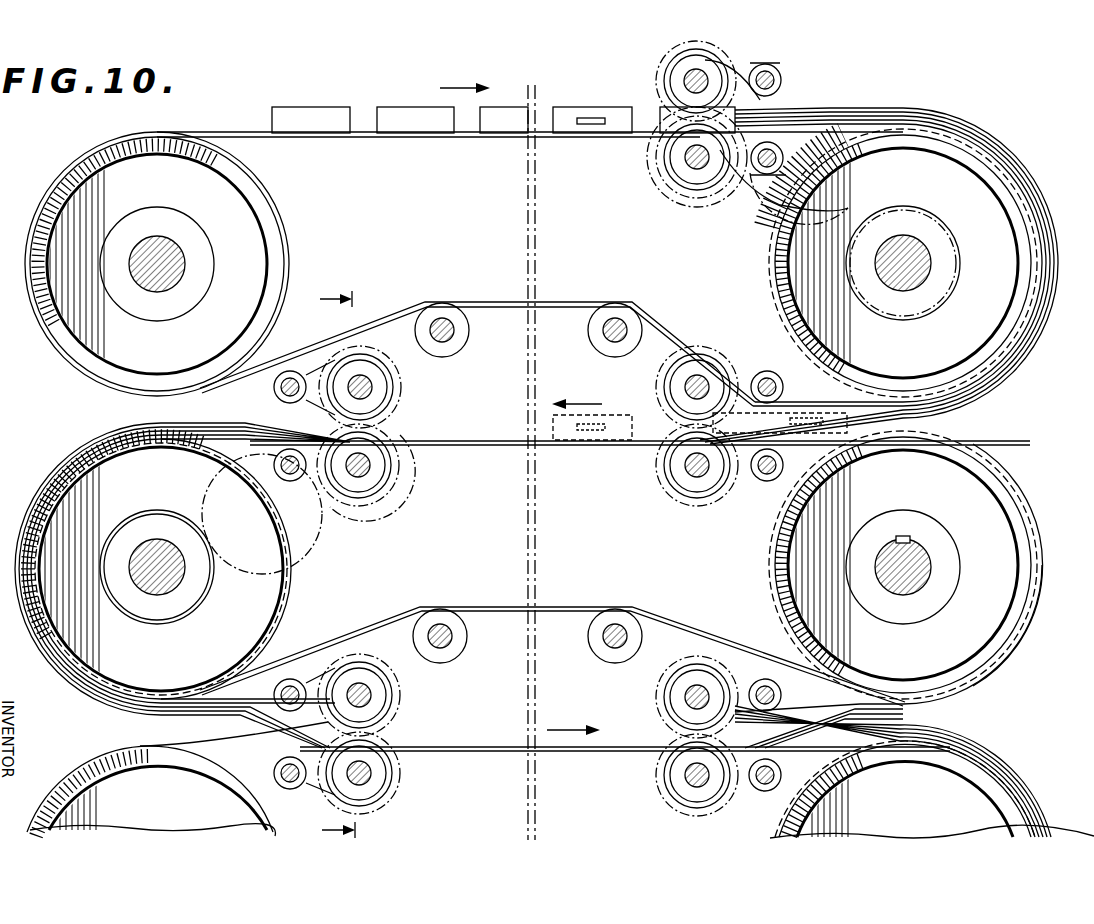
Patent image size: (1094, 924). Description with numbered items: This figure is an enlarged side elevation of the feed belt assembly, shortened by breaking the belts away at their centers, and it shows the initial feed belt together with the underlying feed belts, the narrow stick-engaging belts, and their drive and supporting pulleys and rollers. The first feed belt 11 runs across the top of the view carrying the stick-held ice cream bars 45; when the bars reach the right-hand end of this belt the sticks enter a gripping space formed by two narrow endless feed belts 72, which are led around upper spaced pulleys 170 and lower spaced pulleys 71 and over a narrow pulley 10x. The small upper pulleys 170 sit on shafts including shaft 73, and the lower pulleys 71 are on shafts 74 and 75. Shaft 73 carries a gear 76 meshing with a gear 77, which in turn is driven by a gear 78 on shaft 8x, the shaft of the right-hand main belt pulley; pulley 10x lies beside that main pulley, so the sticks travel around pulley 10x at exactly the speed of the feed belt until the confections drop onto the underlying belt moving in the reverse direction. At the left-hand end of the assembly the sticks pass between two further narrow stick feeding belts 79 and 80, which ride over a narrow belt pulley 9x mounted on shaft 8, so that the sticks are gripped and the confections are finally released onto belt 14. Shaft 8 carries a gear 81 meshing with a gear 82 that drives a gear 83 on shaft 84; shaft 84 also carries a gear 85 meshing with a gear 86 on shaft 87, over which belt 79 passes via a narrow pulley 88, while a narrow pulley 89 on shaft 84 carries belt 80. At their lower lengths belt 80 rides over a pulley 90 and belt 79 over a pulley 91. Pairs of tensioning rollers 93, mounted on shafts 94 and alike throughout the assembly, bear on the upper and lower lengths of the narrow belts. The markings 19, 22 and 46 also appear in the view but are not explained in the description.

The shaft 8 is at (165, 268).
The narrow belt pulley 9x is at (158, 484).
The narrow pulley 10x is at (931, 483).
The shaft 8x is at (910, 265).
The first feed belt 11 is at (480, 302).
The belt 14 is at (470, 752).
The section line 19 is at (476, 567).
The belt 22 is at (858, 114).
The stick-held ice cream bars 45 is at (391, 109).
The insert 46 is at (582, 118).
The lower spaced pulleys 71 is at (690, 466).
The endless feed belts 72 is at (688, 81).
The shaft 73 is at (690, 157).
The shaft 74 is at (690, 388).
The shaft 75 is at (697, 495).
The gear 76 is at (660, 189).
The gear 77 is at (745, 256).
The gear 78 is at (965, 262).
The narrow stick feeding belt 79 is at (232, 412).
The narrow stick feeding belt 80 is at (383, 509).
The gear 81 is at (205, 593).
The gear 82 is at (306, 556).
The gear 83 is at (382, 489).
The shaft 84 is at (372, 466).
The gear 85 is at (390, 417).
The gear 86 is at (393, 389).
The shaft 87 is at (362, 385).
The narrow pulley 88 is at (384, 373).
The narrow pulley 89 is at (388, 495).
The pulley 90 is at (374, 694).
The pulley 91 is at (374, 776).
The tensioning rollers 93 is at (782, 80).
The shafts 94 is at (770, 66).
The upper spaced pulleys 170 is at (707, 74).